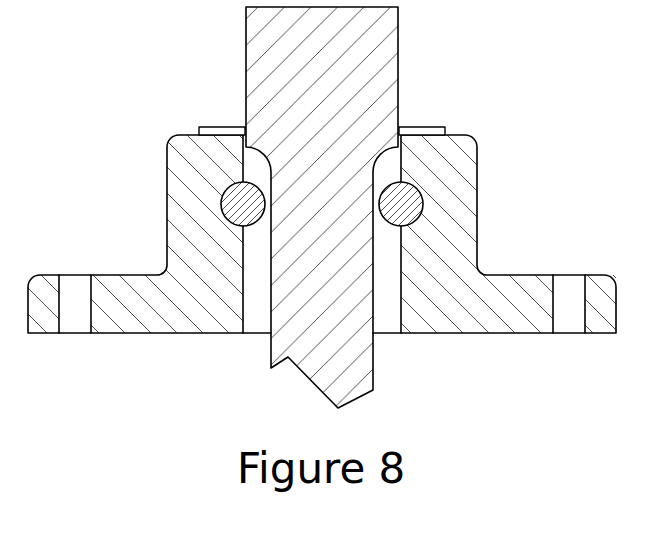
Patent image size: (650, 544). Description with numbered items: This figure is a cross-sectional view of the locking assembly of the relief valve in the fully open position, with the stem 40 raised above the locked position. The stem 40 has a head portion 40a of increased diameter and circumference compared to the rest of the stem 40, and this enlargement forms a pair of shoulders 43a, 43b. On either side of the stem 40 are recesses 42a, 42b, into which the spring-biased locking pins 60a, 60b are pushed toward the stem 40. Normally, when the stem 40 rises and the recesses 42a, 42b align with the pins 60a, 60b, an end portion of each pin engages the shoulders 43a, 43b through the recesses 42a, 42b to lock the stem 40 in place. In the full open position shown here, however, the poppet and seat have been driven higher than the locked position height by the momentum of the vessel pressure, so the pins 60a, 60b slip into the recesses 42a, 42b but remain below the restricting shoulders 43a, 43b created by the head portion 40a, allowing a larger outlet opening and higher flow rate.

The stem 40 is at (330, 332).
The head portion 40a is at (327, 72).
The recess 42a is at (373, 268).
The recess 42b is at (271, 268).
The shoulder 43a is at (379, 144).
The shoulder 43b is at (265, 144).
The pin 60a is at (405, 206).
The pin 60b is at (240, 204).